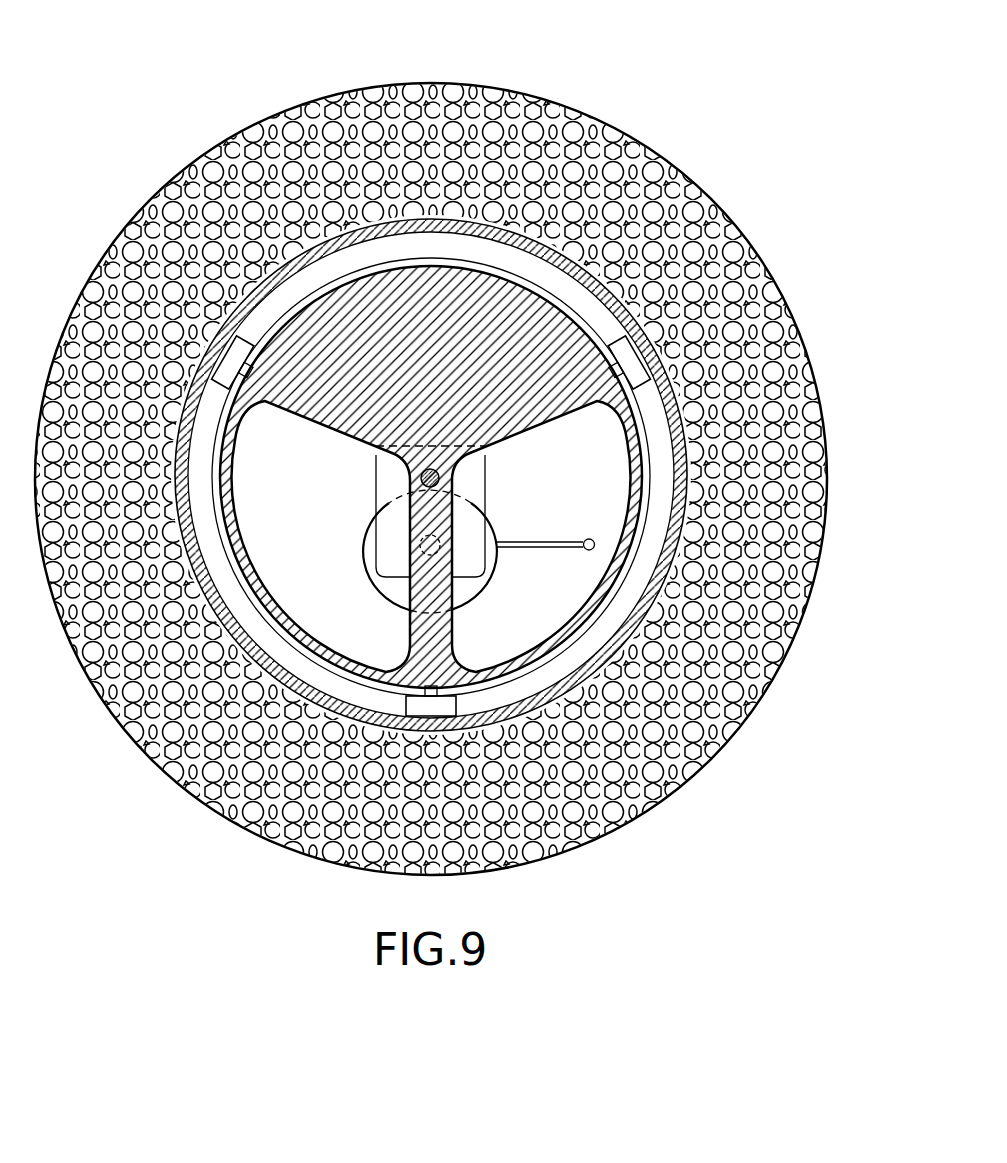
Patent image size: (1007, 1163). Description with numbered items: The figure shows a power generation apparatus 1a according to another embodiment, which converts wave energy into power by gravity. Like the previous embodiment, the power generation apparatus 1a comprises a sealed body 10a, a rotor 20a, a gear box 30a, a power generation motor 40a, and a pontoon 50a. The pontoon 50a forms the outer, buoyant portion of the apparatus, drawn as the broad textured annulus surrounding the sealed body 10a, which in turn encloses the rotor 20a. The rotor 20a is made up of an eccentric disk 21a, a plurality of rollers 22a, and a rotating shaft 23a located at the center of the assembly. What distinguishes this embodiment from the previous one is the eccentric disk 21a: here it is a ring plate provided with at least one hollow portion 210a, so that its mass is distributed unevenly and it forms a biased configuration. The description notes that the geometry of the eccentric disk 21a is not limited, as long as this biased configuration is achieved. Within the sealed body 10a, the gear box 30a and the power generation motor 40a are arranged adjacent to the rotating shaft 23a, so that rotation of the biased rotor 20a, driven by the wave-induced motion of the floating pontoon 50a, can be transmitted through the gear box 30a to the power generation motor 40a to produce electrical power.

The power generation apparatus 1a is at (443, 44).
The sealed body 10a is at (706, 177).
The rotor 20a is at (350, 270).
The eccentric disk 21a is at (588, 272).
The roller 22a is at (651, 353).
The hollow portion 210a is at (640, 360).
The rotating shaft 23a is at (421, 474).
The gear box 30a is at (376, 486).
The power generation motor 40a is at (482, 588).
The pontoon 50a is at (223, 168).